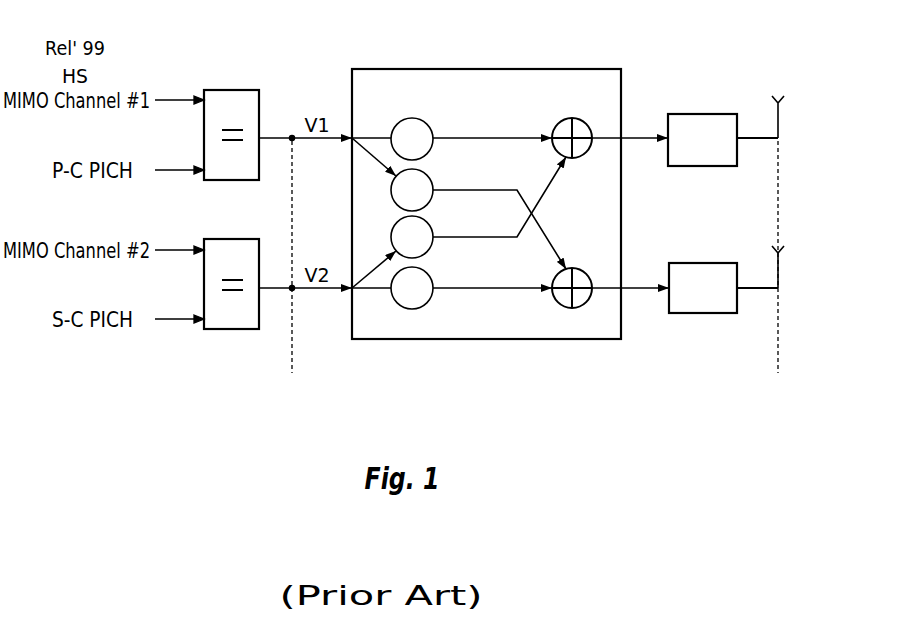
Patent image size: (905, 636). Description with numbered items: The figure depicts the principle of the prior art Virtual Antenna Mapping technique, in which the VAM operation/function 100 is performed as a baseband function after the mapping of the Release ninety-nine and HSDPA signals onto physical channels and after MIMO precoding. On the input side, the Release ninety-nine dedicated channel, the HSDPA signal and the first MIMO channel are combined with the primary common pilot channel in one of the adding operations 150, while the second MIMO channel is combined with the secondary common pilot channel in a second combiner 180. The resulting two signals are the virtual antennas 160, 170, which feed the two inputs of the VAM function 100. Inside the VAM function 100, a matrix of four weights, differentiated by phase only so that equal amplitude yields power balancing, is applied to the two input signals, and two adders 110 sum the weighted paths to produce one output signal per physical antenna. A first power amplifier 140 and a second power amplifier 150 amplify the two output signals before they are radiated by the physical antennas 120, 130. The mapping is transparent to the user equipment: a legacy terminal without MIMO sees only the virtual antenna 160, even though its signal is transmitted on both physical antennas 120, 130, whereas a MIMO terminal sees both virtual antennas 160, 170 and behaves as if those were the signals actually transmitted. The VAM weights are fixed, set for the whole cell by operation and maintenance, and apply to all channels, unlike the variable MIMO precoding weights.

The VAM operation/function 100 is at (486, 181).
The adders 110 is at (624, 213).
The physical antenna 120 is at (802, 117).
The physical antenna 130 is at (803, 267).
The first power amplifier 140 is at (702, 94).
The adding operations / second power amplifier 150 is at (470, 212).
The virtual antenna 160 is at (295, 199).
The virtual antenna 170 is at (274, 341).
The second combiner 180 is at (231, 318).